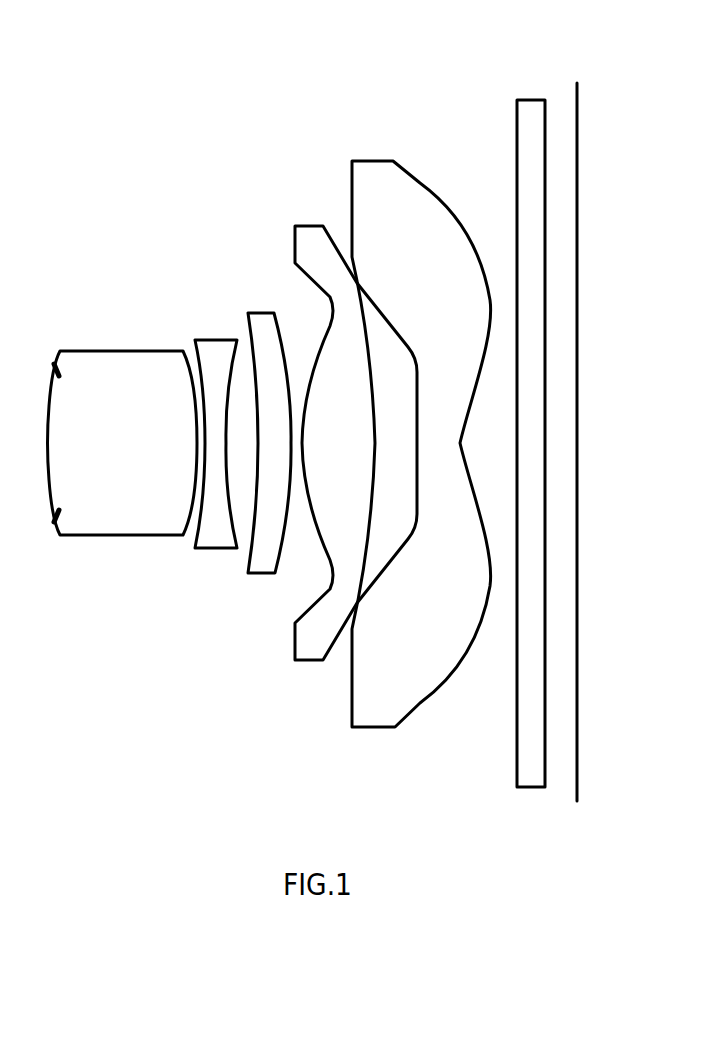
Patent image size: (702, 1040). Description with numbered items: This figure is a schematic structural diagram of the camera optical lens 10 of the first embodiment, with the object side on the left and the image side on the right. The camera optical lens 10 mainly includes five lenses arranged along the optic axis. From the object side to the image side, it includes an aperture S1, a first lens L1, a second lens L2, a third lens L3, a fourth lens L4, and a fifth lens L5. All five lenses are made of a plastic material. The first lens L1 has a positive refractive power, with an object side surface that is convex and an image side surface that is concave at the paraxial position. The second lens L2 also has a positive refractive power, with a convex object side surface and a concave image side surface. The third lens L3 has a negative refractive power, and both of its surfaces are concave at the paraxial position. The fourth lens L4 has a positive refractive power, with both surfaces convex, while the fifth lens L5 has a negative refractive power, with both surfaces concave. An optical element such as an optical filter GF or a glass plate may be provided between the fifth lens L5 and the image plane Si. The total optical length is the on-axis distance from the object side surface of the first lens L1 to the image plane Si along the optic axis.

The camera optical lens 10 is at (343, 23).
The aperture S1 is at (44, 435).
The first lens L1 is at (123, 429).
The second lens L2 is at (216, 432).
The third lens L3 is at (269, 430).
The fourth lens L4 is at (356, 430).
The fifth lens L5 is at (421, 430).
The optical filter GF is at (532, 429).
The image plane Si is at (577, 428).